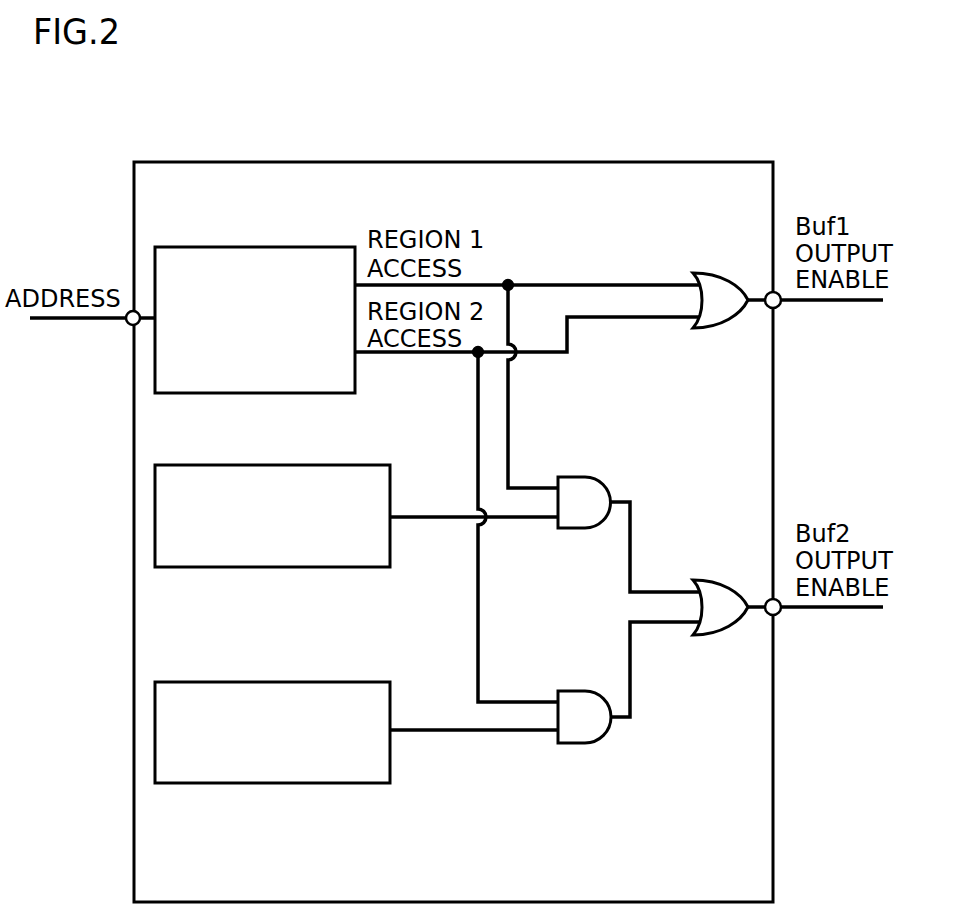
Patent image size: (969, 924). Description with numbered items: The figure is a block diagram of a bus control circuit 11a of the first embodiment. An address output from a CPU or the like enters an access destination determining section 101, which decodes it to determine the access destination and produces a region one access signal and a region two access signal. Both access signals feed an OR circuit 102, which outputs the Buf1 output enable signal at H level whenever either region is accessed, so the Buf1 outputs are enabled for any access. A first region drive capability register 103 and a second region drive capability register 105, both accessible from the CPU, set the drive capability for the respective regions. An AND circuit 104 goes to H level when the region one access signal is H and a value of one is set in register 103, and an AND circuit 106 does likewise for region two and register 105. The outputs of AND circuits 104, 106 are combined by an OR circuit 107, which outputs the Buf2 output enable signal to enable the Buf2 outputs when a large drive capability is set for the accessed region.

The bus control circuit 11a is at (280, 162).
The access destination determining section 101 is at (193, 247).
The OR circuit 102 is at (707, 273).
The region 1 drive capability register 103 is at (193, 465).
The AND circuit 104 is at (573, 477).
The region 2 drive capability register 105 is at (193, 682).
The AND circuit 106 is at (573, 691).
The OR circuit 107 is at (707, 580).